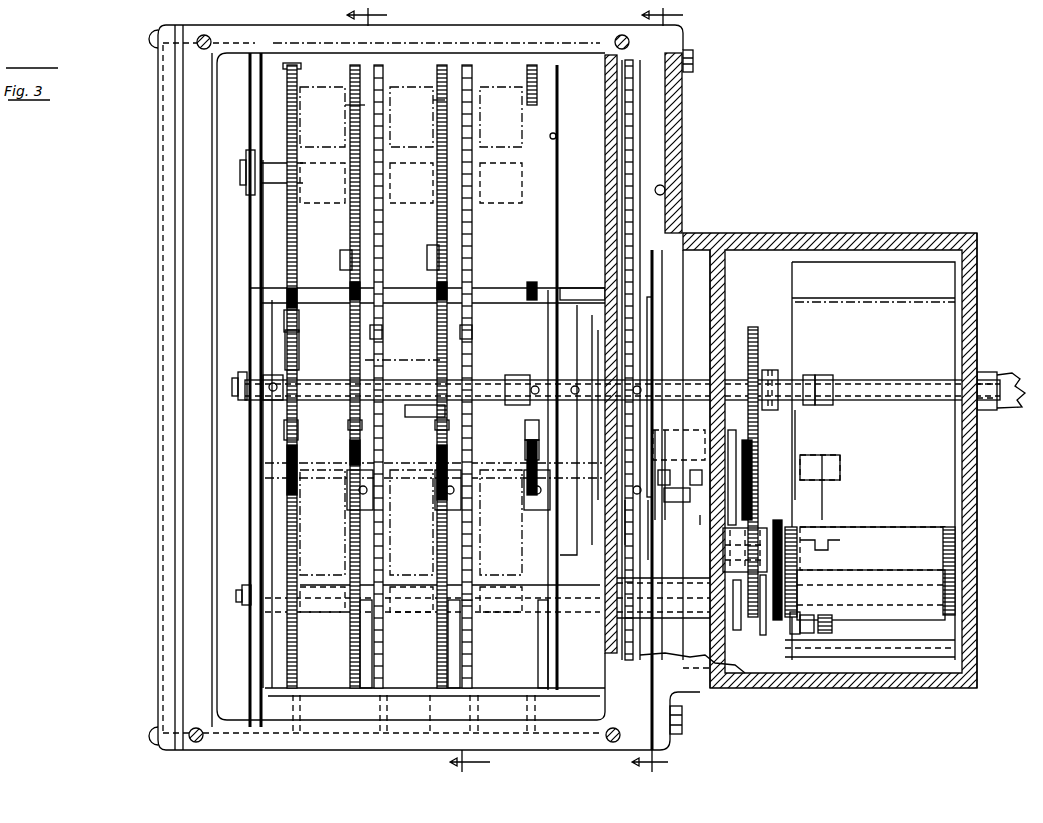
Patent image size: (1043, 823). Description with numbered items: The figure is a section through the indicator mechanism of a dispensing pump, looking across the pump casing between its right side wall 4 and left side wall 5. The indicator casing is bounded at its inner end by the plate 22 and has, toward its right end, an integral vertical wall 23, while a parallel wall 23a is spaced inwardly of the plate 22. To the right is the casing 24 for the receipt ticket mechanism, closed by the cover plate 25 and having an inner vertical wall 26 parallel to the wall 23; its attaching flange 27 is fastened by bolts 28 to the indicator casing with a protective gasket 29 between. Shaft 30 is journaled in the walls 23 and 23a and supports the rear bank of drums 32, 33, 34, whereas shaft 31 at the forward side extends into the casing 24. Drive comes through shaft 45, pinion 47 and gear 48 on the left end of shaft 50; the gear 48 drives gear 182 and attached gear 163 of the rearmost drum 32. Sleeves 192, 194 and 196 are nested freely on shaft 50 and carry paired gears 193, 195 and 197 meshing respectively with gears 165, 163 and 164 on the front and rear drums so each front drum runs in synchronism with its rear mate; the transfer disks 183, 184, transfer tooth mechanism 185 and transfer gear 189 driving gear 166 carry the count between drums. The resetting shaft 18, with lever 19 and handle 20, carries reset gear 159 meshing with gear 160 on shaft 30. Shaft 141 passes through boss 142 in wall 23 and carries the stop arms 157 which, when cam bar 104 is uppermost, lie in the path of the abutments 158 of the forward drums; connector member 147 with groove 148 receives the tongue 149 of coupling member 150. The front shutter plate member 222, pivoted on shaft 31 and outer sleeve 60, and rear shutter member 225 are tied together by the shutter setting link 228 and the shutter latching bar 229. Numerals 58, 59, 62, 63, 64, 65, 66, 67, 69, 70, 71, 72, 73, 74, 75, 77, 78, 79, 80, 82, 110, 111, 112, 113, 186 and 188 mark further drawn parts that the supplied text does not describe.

The right side wall 4 is at (647, 390).
The left side wall 5 is at (408, 390).
The resetting shaft 18 is at (936, 383).
The lever 19 is at (988, 376).
The handle 20 is at (1008, 408).
The plate 22 is at (158, 541).
The vertical wall 23 is at (605, 236).
The wall 23a is at (263, 534).
The casing 24 is at (798, 233).
The cover plate 25 is at (962, 320).
The inner vertical wall 26 is at (722, 310).
The attaching flange 27 is at (683, 150).
The bolts 28 is at (694, 64).
The protective gasket 29 is at (665, 192).
The shaft 30 is at (245, 170).
The shaft 31 is at (242, 605).
The drums 32 is at (324, 140).
The drums 33 is at (410, 130).
The drums 34 is at (500, 123).
The shaft 45 is at (236, 392).
The pinion 47 is at (288, 358).
The gear 48 is at (290, 330).
The shaft 50 is at (242, 380).
The guide bar 58 is at (368, 618).
The guide bar 59 is at (456, 622).
The outer sleeve 60 is at (547, 622).
The gear 62 is at (798, 634).
The gear 63 is at (812, 633).
The gear 64 is at (835, 630).
The drum 65 is at (905, 604).
The plate 66 is at (925, 612).
The shaft 67 is at (767, 630).
The clutch block 69 is at (723, 541).
The drum 70 is at (888, 527).
The gear 71 is at (938, 535).
The gear 72 is at (786, 527).
The bracket 73 is at (810, 530).
The shaft 74 is at (740, 631).
The shaft 75 is at (710, 602).
The lever 77 is at (680, 490).
The gear 78 is at (752, 455).
The sleeve 79 is at (735, 440).
The arm 80 is at (700, 480).
The gear 82 is at (780, 322).
The cam bar 104 is at (780, 528).
The link 110 is at (760, 505).
The gear 111 is at (772, 410).
The collar 112 is at (782, 460).
The arm 113 is at (822, 462).
The shaft 141 is at (578, 552).
The boss 142 is at (624, 512).
The connector member 147 is at (650, 522).
The groove 148 is at (672, 488).
The tongue 149 is at (666, 470).
The coupling member 150 is at (698, 480).
The stop arms 157 is at (352, 522).
The abutments 158 is at (347, 604).
The reset gear 159 is at (637, 300).
The gear 160 is at (648, 114).
The gear 163 is at (350, 74).
The gear 164 is at (384, 665).
The gear 165 is at (527, 78).
The gear 166 is at (383, 75).
The gear 182 is at (287, 73).
The transfer disk 183 is at (350, 104).
The transfer disk 184 is at (440, 101).
The transfer tooth mechanism 185 is at (350, 258).
The block 186 is at (437, 255).
The block 188 is at (590, 290).
The transfer gear 189 is at (382, 338).
The sleeve 192 is at (512, 382).
The gears 193 is at (300, 362).
The sleeve 194 is at (368, 427).
The gear 195 is at (298, 430).
The third sleeve 196 is at (427, 417).
The gear 197 is at (383, 360).
The plate member 222 is at (352, 700).
The rear shutter member 225 is at (560, 75).
The shutter setting link 228 is at (556, 137).
The shutter latching bar 229 is at (558, 652).